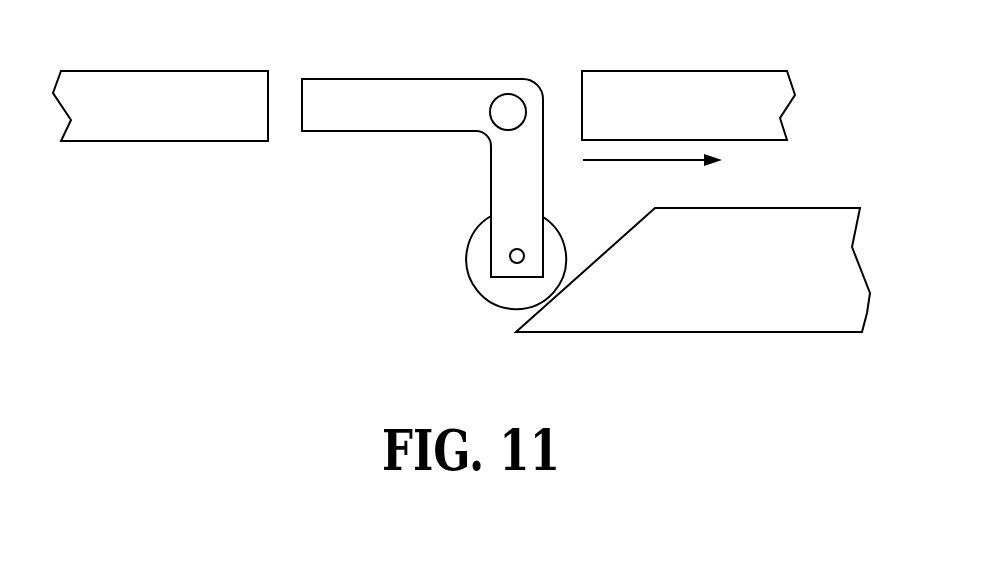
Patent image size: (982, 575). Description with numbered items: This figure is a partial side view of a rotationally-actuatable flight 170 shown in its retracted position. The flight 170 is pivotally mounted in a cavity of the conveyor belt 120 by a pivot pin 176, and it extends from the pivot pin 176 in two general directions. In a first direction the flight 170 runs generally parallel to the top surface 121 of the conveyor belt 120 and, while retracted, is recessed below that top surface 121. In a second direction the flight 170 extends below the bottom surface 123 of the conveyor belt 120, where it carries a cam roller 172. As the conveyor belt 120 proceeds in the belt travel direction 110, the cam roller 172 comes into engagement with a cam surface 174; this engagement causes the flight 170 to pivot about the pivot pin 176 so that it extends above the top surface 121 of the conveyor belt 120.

The top surface 121 is at (178, 90).
The bottom surface 123 is at (202, 148).
The rotationally-actuatable flight 170 is at (374, 100).
The pivot pin 176 is at (508, 100).
The cam roller 172 is at (480, 275).
The conveyor belt 120 is at (717, 82).
The belt travel direction 110 is at (655, 170).
The cam surface 174 is at (808, 203).